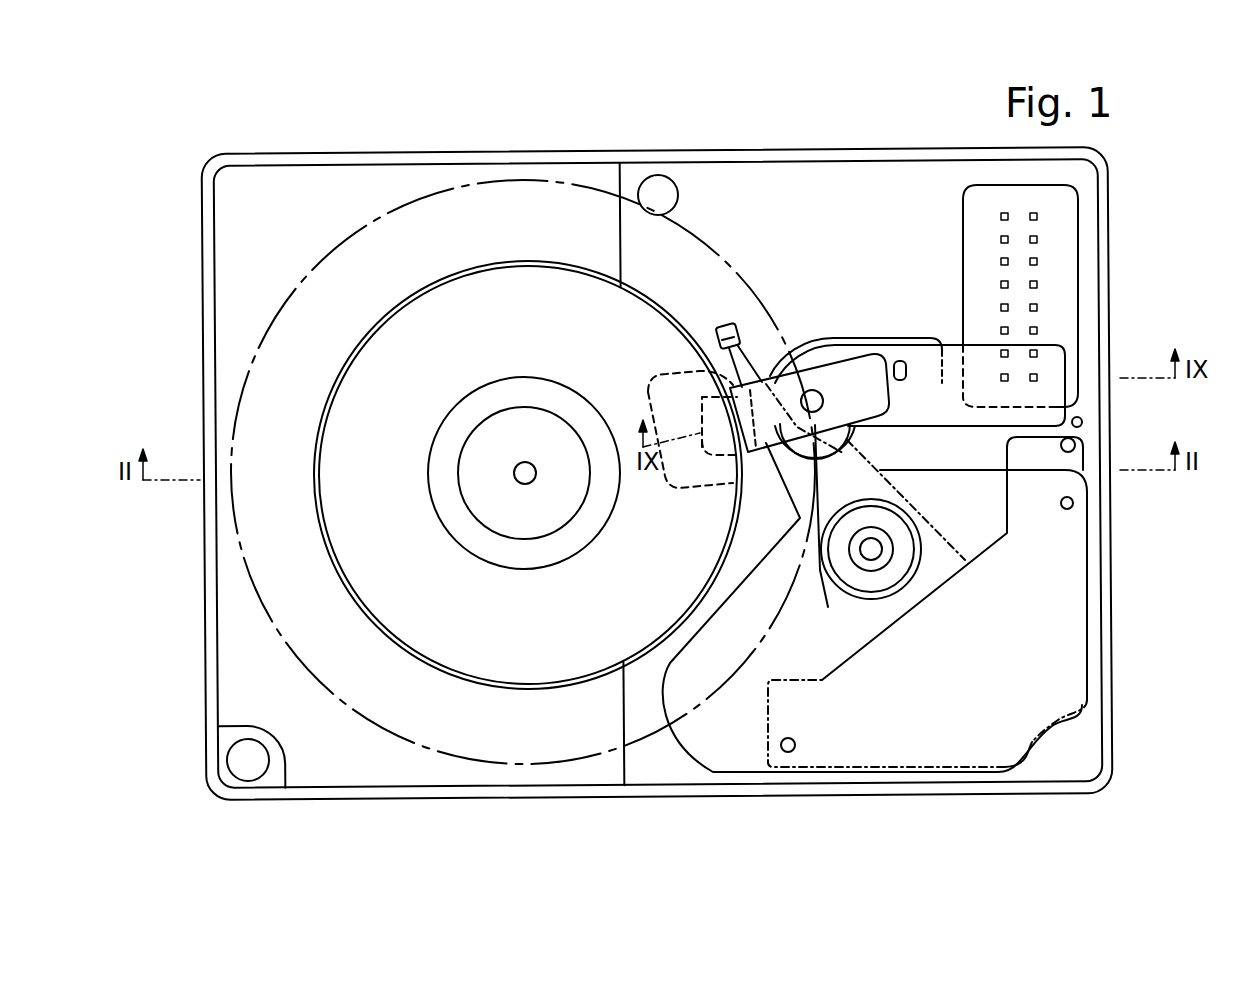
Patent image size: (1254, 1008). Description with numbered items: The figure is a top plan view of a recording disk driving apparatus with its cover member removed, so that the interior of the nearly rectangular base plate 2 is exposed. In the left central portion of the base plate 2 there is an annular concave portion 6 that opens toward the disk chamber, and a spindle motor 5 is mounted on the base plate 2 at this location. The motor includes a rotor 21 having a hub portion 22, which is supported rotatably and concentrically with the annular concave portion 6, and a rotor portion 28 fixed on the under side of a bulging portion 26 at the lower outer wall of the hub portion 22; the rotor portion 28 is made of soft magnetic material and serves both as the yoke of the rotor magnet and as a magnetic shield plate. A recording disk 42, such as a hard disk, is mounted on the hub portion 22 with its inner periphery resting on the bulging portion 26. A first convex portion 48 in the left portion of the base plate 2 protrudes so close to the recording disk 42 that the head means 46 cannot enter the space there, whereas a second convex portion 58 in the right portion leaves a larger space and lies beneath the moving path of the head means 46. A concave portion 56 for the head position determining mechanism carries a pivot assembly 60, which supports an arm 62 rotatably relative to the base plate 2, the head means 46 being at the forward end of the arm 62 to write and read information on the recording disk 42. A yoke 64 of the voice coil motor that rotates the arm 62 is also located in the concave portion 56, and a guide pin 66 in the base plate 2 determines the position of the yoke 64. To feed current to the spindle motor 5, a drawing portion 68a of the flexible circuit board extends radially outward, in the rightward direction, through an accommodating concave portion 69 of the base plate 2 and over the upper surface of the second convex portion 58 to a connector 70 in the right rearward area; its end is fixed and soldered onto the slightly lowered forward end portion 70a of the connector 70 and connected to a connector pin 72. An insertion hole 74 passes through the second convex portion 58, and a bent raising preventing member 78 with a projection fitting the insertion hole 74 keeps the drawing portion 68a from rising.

The base plate 2 is at (670, 153).
The spindle motor 5 is at (439, 665).
The annular concave portion 6 is at (513, 683).
The rotor 21 is at (352, 591).
The hub portion 22 is at (522, 431).
The bulging portion 26 is at (484, 410).
The rotor portion 28 is at (427, 292).
The recording disk 42 is at (508, 198).
The head means 46 is at (752, 320).
The first convex portion 48 is at (337, 293).
The concave portion for head position determining mechanism 56 is at (750, 753).
The second convex portion 58 is at (925, 203).
The pivot assembly 60 is at (903, 538).
The arm 62 is at (840, 602).
The yoke 64 is at (1070, 593).
The guide pin 66 is at (1077, 443).
The drawing portion 68a is at (955, 353).
The accommodating concave portion 69 is at (800, 340).
The connector 70 is at (1065, 255).
The forward end portion of the connector 70a is at (1075, 377).
The connector pin 72 is at (1035, 378).
The insertion hole 74 is at (820, 393).
The raising preventing member 78 is at (880, 420).